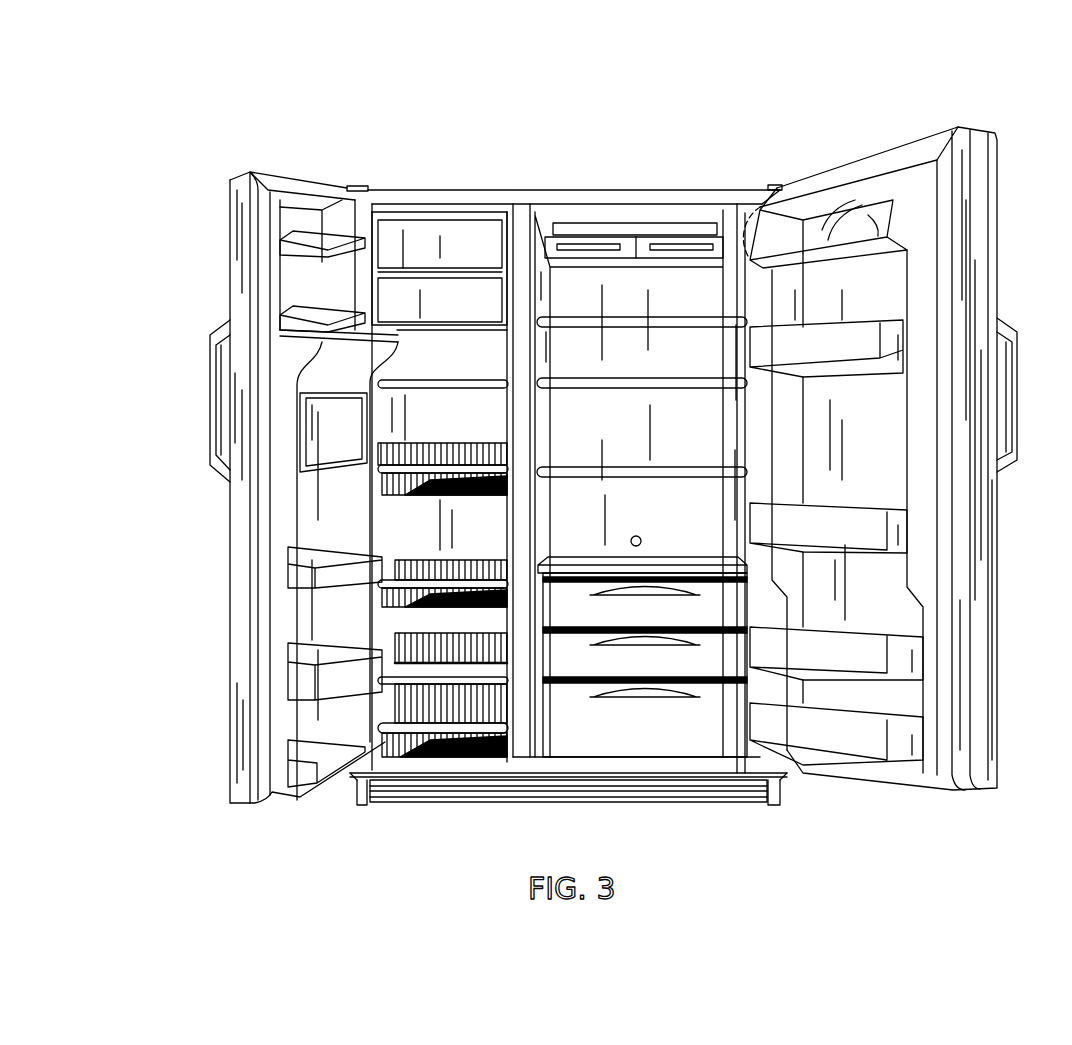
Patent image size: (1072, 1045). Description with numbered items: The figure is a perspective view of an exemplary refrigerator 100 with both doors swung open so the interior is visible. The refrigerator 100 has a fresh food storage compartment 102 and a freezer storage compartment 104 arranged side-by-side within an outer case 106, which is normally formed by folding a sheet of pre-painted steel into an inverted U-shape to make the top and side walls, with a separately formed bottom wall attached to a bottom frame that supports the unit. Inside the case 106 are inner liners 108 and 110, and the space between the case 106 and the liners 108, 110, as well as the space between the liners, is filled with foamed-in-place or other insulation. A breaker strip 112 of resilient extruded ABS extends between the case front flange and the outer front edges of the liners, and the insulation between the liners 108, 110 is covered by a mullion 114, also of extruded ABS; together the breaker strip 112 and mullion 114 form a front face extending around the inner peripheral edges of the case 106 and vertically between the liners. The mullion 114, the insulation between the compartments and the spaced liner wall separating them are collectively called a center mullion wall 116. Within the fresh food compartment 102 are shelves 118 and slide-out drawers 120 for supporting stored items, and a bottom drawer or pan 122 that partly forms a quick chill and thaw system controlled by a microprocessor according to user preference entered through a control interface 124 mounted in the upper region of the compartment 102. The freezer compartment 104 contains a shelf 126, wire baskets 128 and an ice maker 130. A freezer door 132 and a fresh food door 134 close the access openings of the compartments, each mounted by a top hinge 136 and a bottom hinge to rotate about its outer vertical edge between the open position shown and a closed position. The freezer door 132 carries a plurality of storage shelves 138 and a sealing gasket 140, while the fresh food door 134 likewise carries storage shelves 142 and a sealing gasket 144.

The refrigerator 100 is at (636, 50).
The fresh food storage compartment 102 is at (731, 207).
The freezer storage compartment 104 is at (472, 240).
The outer case 106 is at (602, 184).
The inner liner 108 is at (660, 210).
The inner liner 110 is at (405, 217).
The breaker strip 112 is at (685, 197).
The mullion 114 is at (520, 470).
The center mullion wall 116 is at (556, 415).
The shelves 118 is at (563, 328).
The slide-out drawers 120 is at (658, 619).
The bottom drawer or pan 122 is at (658, 734).
The control interface 124 is at (568, 230).
The shelf 126 is at (440, 382).
The wire baskets 128 is at (428, 578).
The ice maker 130 is at (440, 303).
The freezer door 132 is at (203, 188).
The fresh food door 134 is at (1010, 188).
The top hinge 136 is at (357, 186).
The storage shelves 138 is at (302, 778).
The sealing gasket 140 is at (278, 187).
The storage shelves 142 is at (838, 370).
The sealing gasket 144 is at (928, 155).